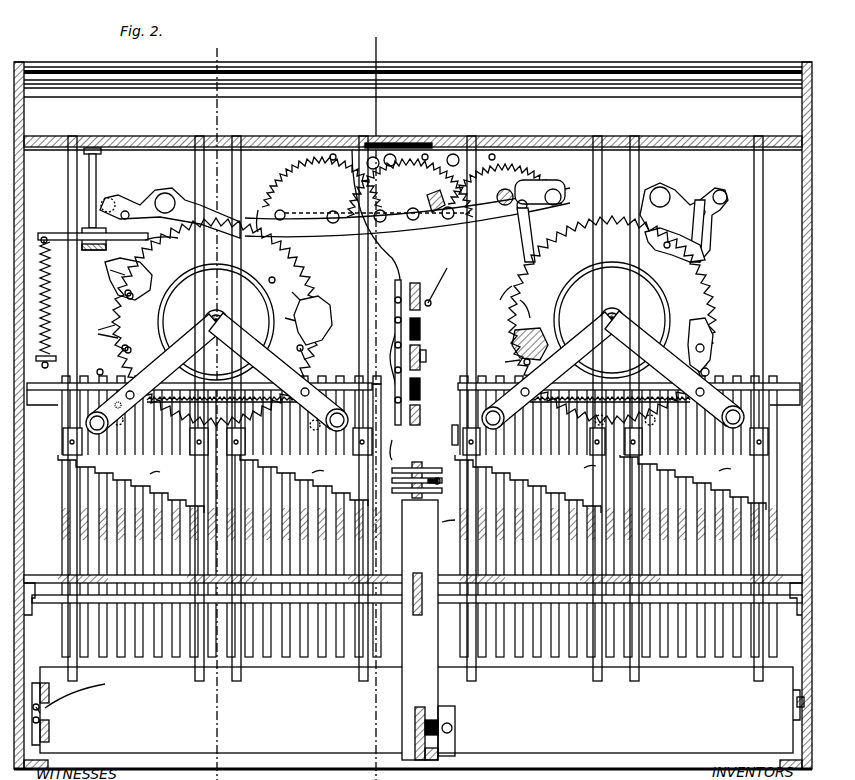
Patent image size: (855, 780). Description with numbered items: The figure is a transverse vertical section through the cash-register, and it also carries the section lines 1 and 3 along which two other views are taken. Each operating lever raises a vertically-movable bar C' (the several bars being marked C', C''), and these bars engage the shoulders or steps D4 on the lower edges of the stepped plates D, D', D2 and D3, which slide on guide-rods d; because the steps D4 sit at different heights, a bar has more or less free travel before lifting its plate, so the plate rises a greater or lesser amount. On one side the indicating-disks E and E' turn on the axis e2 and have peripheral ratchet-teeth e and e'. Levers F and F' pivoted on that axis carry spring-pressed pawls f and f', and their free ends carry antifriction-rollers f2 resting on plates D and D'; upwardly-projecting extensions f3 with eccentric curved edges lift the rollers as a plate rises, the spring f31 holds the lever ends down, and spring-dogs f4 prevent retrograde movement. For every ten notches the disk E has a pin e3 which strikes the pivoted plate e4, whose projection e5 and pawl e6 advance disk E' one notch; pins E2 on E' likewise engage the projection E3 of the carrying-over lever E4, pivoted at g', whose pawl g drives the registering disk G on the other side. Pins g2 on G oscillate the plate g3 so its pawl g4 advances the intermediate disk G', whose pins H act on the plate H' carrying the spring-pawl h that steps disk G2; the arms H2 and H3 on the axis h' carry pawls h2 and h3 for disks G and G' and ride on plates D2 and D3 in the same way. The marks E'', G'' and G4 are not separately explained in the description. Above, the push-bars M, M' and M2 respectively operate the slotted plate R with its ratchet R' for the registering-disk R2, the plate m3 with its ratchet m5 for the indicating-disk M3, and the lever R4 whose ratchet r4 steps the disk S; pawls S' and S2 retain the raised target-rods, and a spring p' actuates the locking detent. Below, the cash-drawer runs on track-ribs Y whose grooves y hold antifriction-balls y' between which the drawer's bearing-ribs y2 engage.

The section line 1 is at (375, 29).
The section line 3 is at (217, 39).
The vertically-movable bar C' is at (416, 516).
The central type bar C'' is at (445, 525).
The guide-rods d is at (412, 479).
The stepped plate D is at (131, 484).
The stepped plate D' is at (304, 476).
The stepped plate D2 is at (528, 479).
The stepped plate D3 is at (693, 478).
The shoulders or steps D4 is at (433, 469).
The ratchet-teeth e is at (94, 302).
The ratchet-teeth e' is at (105, 271).
The axis e2 is at (216, 280).
The pin or projection e3 is at (200, 305).
The pivoted lever or plate e4 is at (170, 213).
The shoulder or projection e5 is at (165, 242).
The pawl or dog e6 is at (104, 246).
The indicating-disk E is at (216, 322).
The indicating-disk E' is at (216, 322).
The wheel arm E'' is at (286, 326).
The pins or projections E2 is at (320, 320).
The projection E3 is at (316, 291).
The carrying-over lever E4 is at (248, 212).
The spring-pressed dog or pawl f is at (95, 364).
The spring-pressed dog or pawl f' is at (317, 356).
The antifriction-roller f2 is at (90, 425).
The upwardly-projecting extension f3 is at (58, 395).
The spring-dog f4 is at (140, 424).
The spring f31 is at (655, 396).
The lever F is at (154, 374).
The lever F' is at (278, 372).
The pawl g is at (536, 220).
The pivot g' is at (530, 150).
The pins or projections g2 is at (543, 329).
The pivoted plate or lever g3 is at (645, 195).
The pawl or dog g4 is at (500, 286).
The registering disk G is at (514, 344).
The intermediate registering disk G' is at (720, 338).
The wheel rim G'' is at (579, 320).
The registering disk G2 is at (612, 320).
The pawl arm G4 is at (506, 299).
The spring-pawl h is at (713, 231).
The axis h' is at (628, 313).
The spring-pressed pawl h2 is at (499, 365).
The spring-pressed pawl h3 is at (708, 368).
The pins or projections H is at (648, 312).
The pivoted plate or lever H' is at (675, 234).
The pivoted arm or lever H2 is at (550, 370).
The pivoted arm or lever H3 is at (674, 369).
The plate m3 is at (447, 287).
The ratchet m5 is at (428, 195).
The push-rod M is at (425, 352).
The push-bar M' is at (441, 354).
The push-rod M2 is at (432, 435).
The indicating wheel or disk M3 is at (540, 176).
The spring p' is at (505, 184).
The ratchet r4 is at (277, 203).
The vertically movable plate or bar R is at (407, 220).
The ratchet R' is at (410, 188).
The registering-disk R2 is at (400, 158).
The lever R4 is at (322, 182).
The registering-disk S is at (370, 285).
The pawl S' is at (380, 459).
The pawl S2 is at (395, 498).
The track-rib Y is at (34, 685).
The longitudinal groove y is at (52, 709).
The antifriction-balls y' is at (60, 710).
The bearing-rib y2 is at (83, 692).